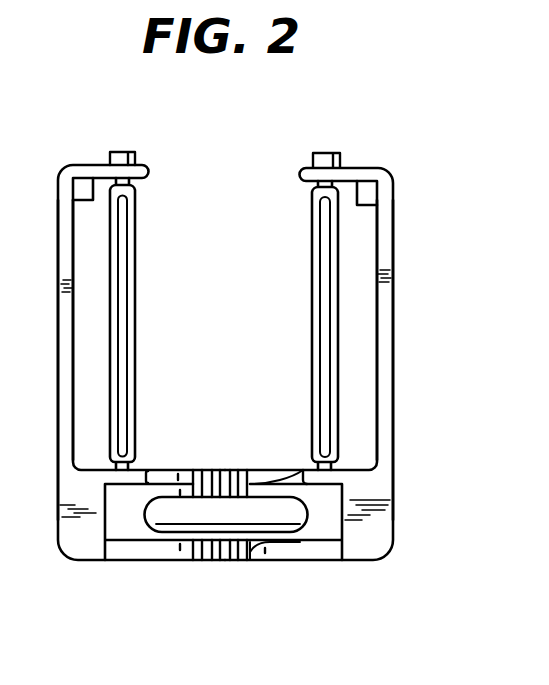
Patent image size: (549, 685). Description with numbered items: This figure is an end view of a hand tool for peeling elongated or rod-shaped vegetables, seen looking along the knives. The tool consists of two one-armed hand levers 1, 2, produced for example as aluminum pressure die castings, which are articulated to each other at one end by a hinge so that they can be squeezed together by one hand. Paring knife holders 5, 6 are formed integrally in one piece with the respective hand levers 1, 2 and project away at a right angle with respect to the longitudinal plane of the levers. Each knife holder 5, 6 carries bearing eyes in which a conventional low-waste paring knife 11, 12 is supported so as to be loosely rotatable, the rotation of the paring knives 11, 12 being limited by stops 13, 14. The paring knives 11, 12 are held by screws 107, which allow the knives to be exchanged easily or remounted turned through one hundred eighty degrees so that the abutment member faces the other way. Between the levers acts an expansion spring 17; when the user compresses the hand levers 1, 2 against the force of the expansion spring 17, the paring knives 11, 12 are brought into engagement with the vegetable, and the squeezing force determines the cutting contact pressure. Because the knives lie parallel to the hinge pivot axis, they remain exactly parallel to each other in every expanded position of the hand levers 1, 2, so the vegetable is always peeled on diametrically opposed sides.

The hand lever 1 is at (74, 537).
The hand lever 2 is at (372, 535).
The paring knife holder 5 is at (387, 293).
The paring knife holder 6 is at (62, 315).
The paring knife 11 is at (312, 296).
The paring knife 12 is at (136, 282).
The stop 13 is at (74, 184).
The stop 14 is at (364, 196).
The expansion spring 17 is at (205, 536).
The screws 107 is at (313, 159).